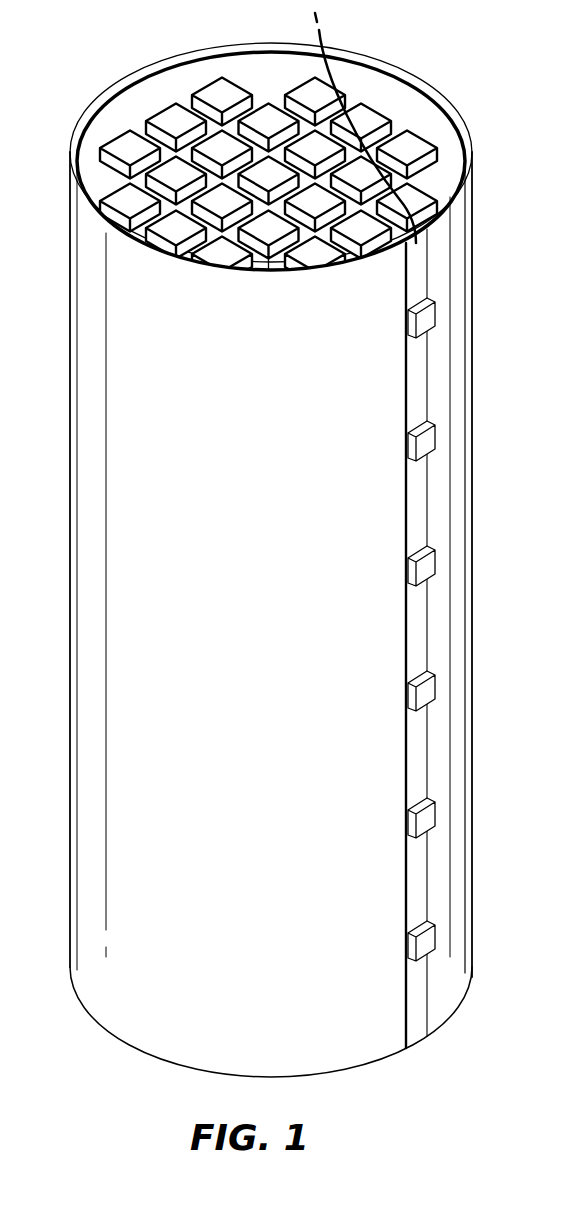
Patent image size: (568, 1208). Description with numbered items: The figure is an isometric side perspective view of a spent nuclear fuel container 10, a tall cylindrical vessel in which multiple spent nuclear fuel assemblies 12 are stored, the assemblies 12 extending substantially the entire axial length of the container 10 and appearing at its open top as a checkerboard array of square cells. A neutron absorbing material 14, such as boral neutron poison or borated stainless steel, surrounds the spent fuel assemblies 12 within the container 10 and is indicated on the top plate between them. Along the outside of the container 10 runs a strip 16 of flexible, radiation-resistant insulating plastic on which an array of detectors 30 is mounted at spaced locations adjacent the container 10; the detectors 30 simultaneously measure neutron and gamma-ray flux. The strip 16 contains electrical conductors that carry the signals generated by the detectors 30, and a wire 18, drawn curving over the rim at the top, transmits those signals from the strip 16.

The spent nuclear fuel container 10 is at (73, 457).
The spent nuclear fuel assemblies 12 is at (224, 97).
The neutron absorbing material 14 is at (132, 121).
The strip 16 is at (417, 632).
The wire 18 is at (328, 43).
The detectors 30 is at (425, 572).